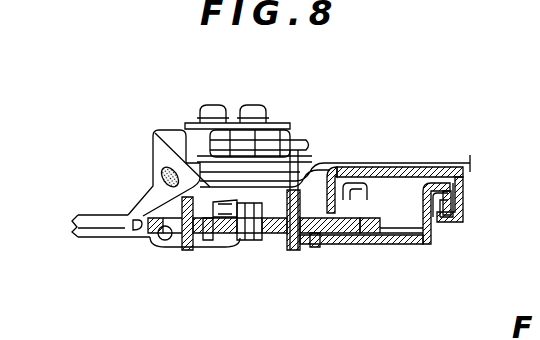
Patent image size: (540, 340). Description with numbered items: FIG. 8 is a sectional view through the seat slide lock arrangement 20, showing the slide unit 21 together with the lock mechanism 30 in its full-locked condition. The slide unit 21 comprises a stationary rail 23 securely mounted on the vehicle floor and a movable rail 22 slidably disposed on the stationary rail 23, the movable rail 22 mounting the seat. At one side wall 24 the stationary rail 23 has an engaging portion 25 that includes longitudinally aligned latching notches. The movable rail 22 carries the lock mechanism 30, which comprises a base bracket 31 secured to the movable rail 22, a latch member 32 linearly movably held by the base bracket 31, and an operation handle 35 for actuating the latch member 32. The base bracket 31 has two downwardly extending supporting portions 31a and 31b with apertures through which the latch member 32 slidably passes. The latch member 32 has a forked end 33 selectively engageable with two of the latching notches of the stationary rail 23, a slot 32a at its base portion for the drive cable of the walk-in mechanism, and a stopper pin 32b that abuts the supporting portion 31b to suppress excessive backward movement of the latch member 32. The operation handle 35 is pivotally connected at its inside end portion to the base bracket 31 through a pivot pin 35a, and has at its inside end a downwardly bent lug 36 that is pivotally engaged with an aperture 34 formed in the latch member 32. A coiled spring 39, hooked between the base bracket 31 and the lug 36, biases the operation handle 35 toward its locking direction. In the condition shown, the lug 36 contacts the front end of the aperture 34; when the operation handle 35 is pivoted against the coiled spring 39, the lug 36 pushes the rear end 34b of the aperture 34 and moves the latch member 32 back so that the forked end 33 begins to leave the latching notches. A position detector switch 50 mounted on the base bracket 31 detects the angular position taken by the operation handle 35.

The seat rail channel 20 is at (468, 220).
The slide unit 21 is at (490, 218).
The movable rail 22 is at (466, 188).
The stationary rail 23 is at (434, 243).
The side wall 24 is at (350, 185).
The engaging portion 25 is at (392, 168).
The lock mechanism 30 is at (207, 250).
The base bracket 31 is at (450, 160).
The supporting portion 31a is at (313, 249).
The supporting portion 31b is at (190, 250).
The latch member 32 is at (150, 232).
The slot 32a is at (170, 232).
The stopper pin 32b is at (212, 243).
The forked end 33 is at (390, 234).
The aperture 34 is at (293, 240).
The rear end 34b is at (266, 240).
The operation handle 35 is at (143, 202).
The pivot pin 35a is at (198, 148).
The downwardly bent lug 36 is at (290, 253).
The coiled spring 39 is at (174, 145).
The position detector switch 50 is at (289, 132).